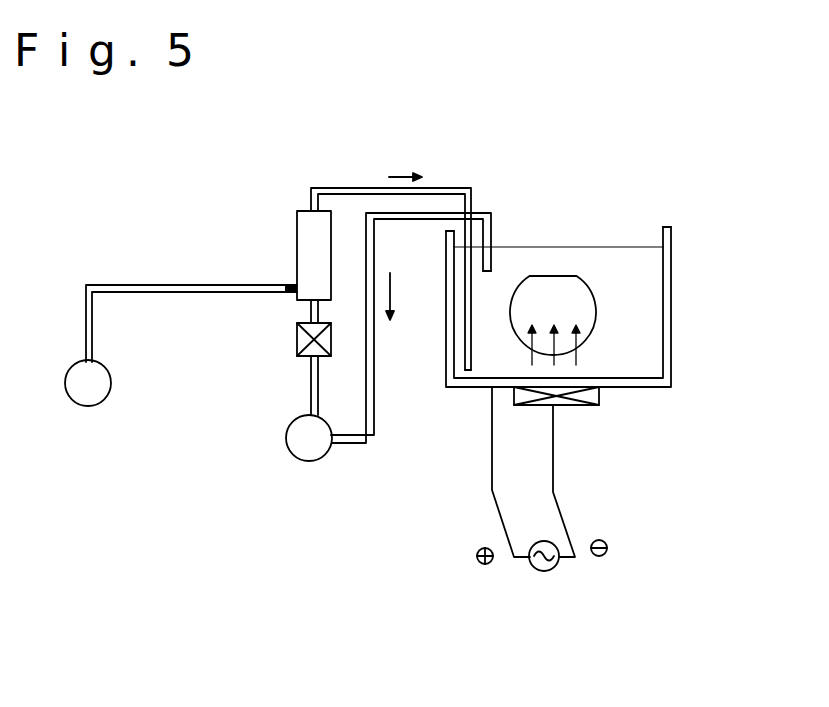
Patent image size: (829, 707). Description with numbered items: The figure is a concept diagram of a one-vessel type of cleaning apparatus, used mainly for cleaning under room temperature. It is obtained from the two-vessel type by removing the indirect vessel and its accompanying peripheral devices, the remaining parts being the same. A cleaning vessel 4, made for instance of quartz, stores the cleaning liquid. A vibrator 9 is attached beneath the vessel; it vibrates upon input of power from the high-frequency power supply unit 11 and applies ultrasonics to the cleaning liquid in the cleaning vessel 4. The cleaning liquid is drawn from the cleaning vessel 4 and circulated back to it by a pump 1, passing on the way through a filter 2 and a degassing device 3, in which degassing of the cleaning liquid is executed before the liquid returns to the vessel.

The pump for circulation 1 is at (285, 437).
The filter 2 is at (297, 340).
The degassing device 3 is at (297, 240).
The cleaning vessel 4 is at (671, 240).
The vibrator 9 is at (599, 395).
The high-frequency power supply unit 11 is at (546, 571).